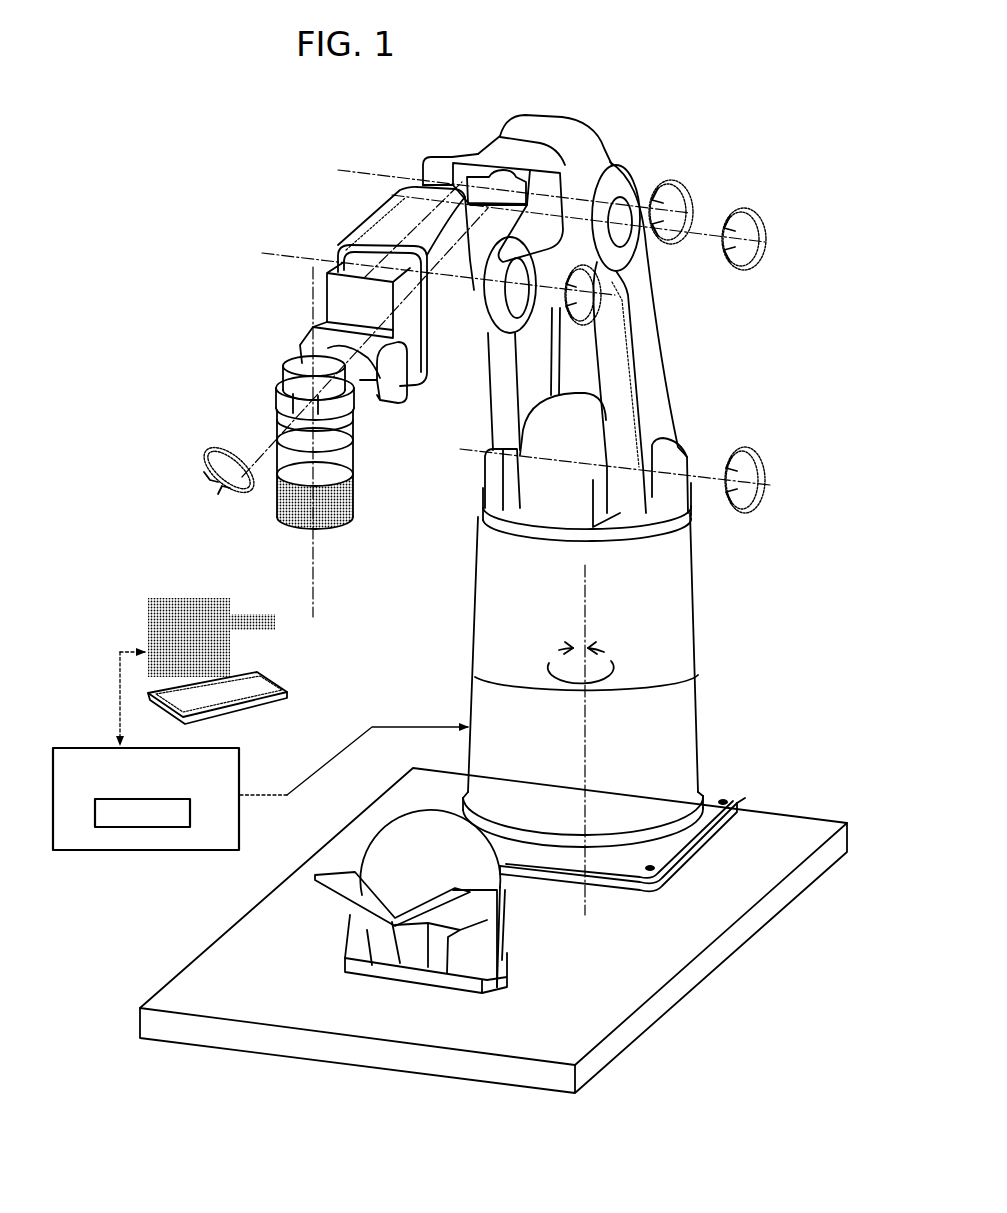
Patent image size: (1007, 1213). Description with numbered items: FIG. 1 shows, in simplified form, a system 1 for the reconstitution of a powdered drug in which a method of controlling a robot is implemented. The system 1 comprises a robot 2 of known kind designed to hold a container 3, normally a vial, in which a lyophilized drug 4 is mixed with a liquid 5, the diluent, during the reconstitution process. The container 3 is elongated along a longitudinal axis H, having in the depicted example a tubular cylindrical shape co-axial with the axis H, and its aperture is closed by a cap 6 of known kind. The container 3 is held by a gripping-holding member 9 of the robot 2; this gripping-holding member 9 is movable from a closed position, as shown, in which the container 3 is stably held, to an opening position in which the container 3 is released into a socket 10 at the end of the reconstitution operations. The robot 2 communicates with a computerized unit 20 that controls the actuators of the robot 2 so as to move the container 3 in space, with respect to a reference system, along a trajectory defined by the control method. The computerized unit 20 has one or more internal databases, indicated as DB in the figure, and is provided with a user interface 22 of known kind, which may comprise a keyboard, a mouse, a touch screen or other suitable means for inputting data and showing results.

The system 1 is at (632, 78).
The robot 2 is at (676, 154).
The container 3 is at (330, 522).
The lyophilized drug 4 is at (340, 503).
The liquid 5 is at (280, 458).
The cap 6 is at (298, 362).
The gripping-holding member 9 is at (320, 337).
The socket 10 is at (487, 875).
The computerized unit 20 is at (72, 748).
The user interface 22 is at (167, 597).
The longitudinal axis H is at (314, 598).